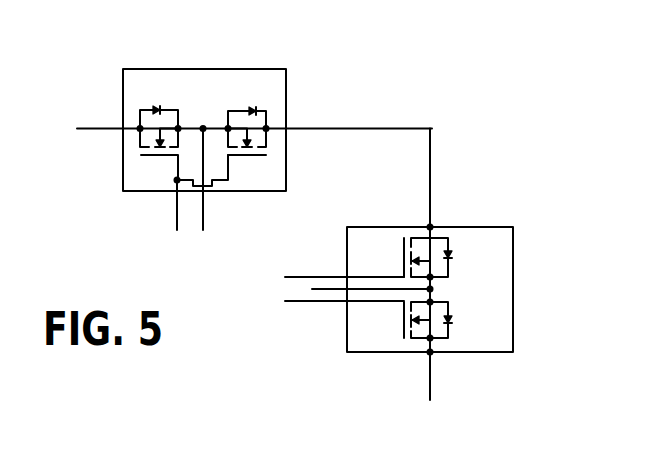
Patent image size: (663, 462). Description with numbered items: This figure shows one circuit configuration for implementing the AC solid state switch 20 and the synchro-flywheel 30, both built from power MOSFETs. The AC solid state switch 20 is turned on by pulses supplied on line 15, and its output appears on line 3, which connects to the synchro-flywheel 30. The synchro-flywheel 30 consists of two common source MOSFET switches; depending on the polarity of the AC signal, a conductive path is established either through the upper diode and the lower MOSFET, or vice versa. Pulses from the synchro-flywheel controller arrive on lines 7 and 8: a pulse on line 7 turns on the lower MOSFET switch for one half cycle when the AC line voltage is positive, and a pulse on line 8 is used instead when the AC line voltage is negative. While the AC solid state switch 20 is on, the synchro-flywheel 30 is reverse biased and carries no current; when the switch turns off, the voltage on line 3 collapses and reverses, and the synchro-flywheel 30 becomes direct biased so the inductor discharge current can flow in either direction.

The line 3 is at (432, 129).
The line 7 is at (292, 305).
The line 8 is at (290, 274).
The line 15 is at (177, 224).
The AC solid state switch 20 is at (203, 69).
The synchro-flywheel 30 is at (492, 227).